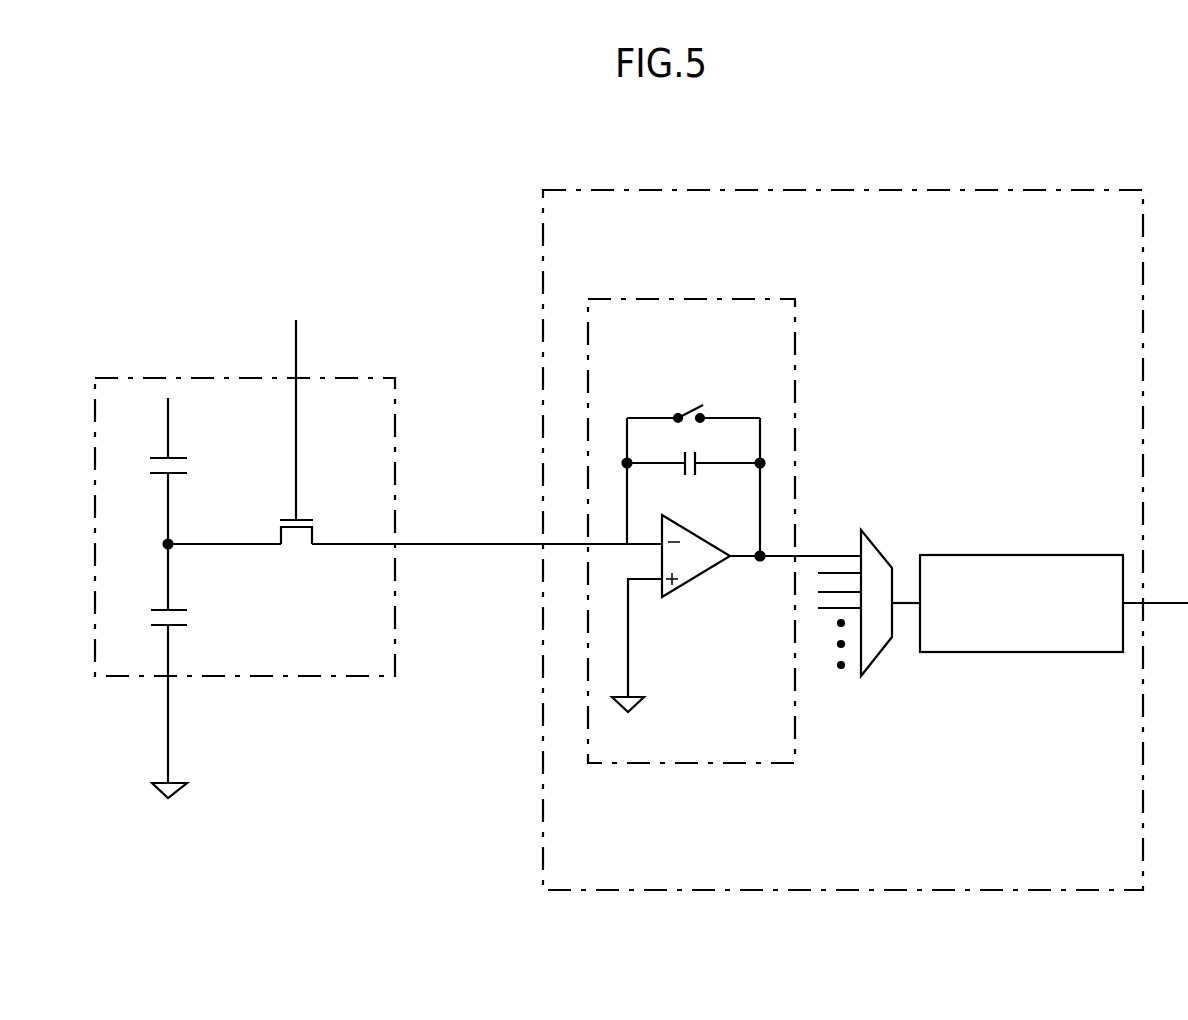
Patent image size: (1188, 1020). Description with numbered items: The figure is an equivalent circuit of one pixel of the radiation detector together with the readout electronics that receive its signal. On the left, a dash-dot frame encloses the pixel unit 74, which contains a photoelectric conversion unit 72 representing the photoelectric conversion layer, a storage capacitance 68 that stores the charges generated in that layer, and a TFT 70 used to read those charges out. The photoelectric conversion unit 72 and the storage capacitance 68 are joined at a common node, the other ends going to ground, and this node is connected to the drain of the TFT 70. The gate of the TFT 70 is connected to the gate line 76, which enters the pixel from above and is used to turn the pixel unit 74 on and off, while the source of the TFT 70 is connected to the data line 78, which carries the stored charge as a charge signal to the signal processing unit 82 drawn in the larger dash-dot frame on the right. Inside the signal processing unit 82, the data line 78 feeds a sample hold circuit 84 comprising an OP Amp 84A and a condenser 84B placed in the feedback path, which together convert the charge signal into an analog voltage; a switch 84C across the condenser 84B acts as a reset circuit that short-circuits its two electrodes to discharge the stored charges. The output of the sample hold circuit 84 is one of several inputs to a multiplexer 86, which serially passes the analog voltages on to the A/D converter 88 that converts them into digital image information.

The storage capacitance 68 is at (176, 610).
The TFT 70 is at (300, 520).
The photoelectric conversion unit 72 is at (172, 456).
The pixel unit 74 is at (162, 378).
The gate line 76 is at (296, 352).
The data line 78 is at (466, 548).
The signal processing unit 82 is at (962, 190).
The sample hold circuit 84 is at (694, 299).
The OP Amp 84A is at (703, 575).
The condenser 84B is at (699, 472).
The switch 84C is at (688, 411).
The multiplexer 86 is at (877, 548).
The A/D converter 88 is at (1045, 555).